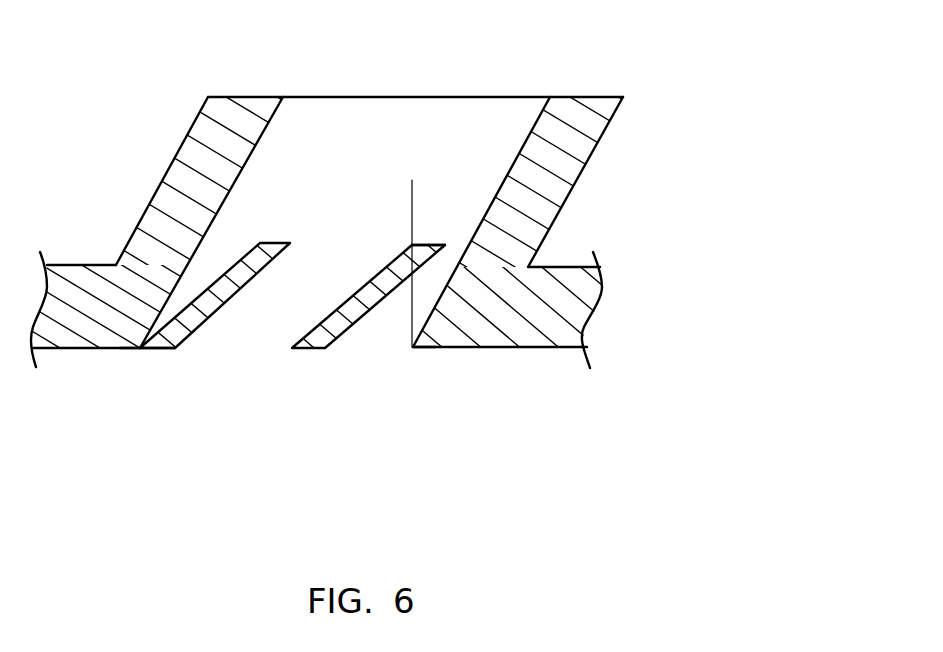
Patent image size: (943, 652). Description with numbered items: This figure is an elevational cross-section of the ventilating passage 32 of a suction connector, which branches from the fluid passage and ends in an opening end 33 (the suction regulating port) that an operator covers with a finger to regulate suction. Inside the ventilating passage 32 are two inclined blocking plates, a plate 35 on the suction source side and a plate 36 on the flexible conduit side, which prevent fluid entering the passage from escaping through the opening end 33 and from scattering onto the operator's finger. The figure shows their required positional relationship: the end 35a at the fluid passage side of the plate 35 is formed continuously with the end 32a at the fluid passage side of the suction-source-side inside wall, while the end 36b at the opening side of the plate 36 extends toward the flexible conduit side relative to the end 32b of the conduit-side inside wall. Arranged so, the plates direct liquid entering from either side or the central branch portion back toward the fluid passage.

The ventilating passage 32 is at (580, 158).
The end at the fluid passage side of the inside wall at the suction source side 32a is at (138, 348).
The end at the fluid passage side of the inside wall of the flexible conduit side 32b is at (412, 348).
The opening end 33 is at (332, 98).
The plate 35 is at (221, 311).
The end at the fluid passage side of the plate 35a is at (172, 345).
The plate 36 is at (380, 312).
The end at the opening portion side of the plate 36b is at (443, 245).